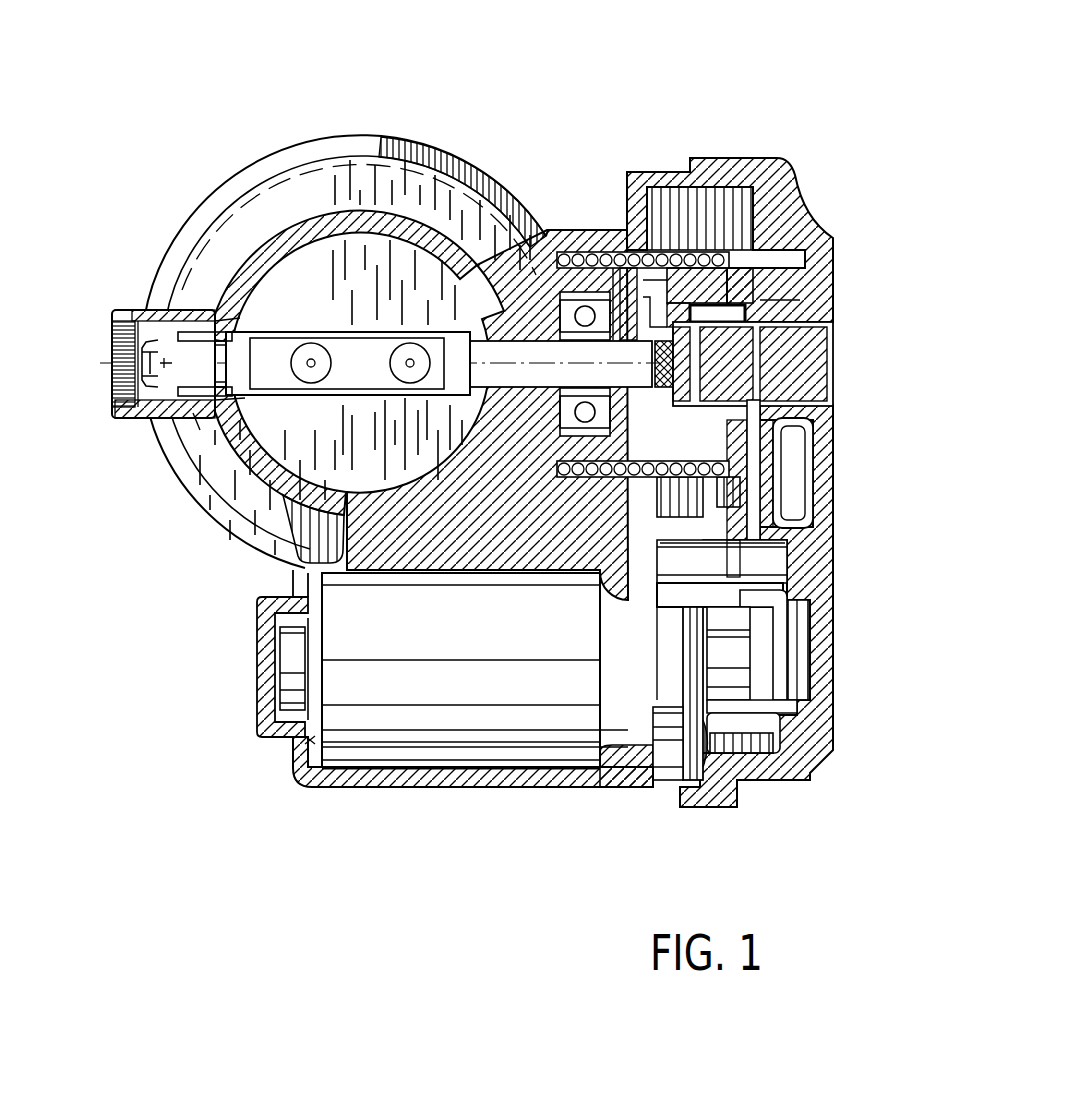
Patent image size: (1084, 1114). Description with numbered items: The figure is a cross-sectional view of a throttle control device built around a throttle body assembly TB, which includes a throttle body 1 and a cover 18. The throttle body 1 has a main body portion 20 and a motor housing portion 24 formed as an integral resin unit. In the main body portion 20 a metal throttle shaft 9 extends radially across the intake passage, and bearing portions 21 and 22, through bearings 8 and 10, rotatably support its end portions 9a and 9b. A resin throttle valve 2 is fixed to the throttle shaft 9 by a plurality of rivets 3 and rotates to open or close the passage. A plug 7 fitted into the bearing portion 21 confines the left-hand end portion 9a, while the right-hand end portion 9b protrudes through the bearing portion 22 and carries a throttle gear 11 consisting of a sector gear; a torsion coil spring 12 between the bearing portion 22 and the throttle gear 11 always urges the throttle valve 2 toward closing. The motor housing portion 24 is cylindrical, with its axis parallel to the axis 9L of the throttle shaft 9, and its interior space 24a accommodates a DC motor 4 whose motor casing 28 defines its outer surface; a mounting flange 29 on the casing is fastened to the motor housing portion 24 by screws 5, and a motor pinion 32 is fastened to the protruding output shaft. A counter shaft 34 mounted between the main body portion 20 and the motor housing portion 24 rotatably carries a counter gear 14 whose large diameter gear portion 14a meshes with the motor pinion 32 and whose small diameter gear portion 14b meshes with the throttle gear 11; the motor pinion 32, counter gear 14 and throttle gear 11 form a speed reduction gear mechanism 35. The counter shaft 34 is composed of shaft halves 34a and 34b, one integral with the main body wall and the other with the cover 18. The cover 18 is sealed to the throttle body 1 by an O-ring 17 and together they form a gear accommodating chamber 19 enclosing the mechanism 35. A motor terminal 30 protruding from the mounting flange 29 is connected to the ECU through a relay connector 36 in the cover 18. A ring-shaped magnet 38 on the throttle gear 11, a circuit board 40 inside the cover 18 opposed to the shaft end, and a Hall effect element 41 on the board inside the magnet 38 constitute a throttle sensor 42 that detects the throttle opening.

The throttle body assembly TB is at (454, 136).
The throttle body 1 is at (268, 155).
The throttle valve 2 is at (340, 255).
The rivets 3 is at (410, 341).
The motor 4 is at (500, 755).
The screws 5 is at (720, 755).
The plug 7 is at (135, 398).
The bearing 8 is at (150, 340).
The throttle shaft 9 is at (515, 348).
The end portion 9a is at (180, 334).
The end portion 9b is at (588, 312).
The axis 9L is at (142, 363).
The bearing 10 is at (530, 200).
The throttle gear 11 is at (782, 476).
The torsion coil spring 12 is at (722, 330).
The counter gear 14 is at (772, 512).
The large diameter gear portion 14a is at (740, 706).
The small diameter gear portion 14b is at (745, 598).
The O-ring 17 is at (700, 248).
The cover 18 is at (790, 186).
The gear accommodating chamber 19 is at (722, 252).
The main body portion 20 is at (272, 310).
The bearing portion 21 is at (193, 415).
The bearing portion 22 is at (586, 296).
The motor housing portion 24 is at (436, 787).
The space 24a is at (302, 742).
The motor casing 28 is at (370, 755).
The mounting flange 29 is at (690, 770).
The motor terminal 30 is at (778, 780).
The motor pinion 32 is at (798, 650).
The counter shaft 34 is at (762, 549).
The shaft half 34a is at (692, 592).
The shaft half 34b is at (772, 560).
The speed reduction gear mechanism 35 is at (802, 454).
The relay connector 36 is at (790, 740).
The magnet 38 is at (778, 305).
The circuit board 40 is at (770, 334).
The Hall effect element 41 is at (735, 365).
The throttle sensor 42 is at (664, 342).